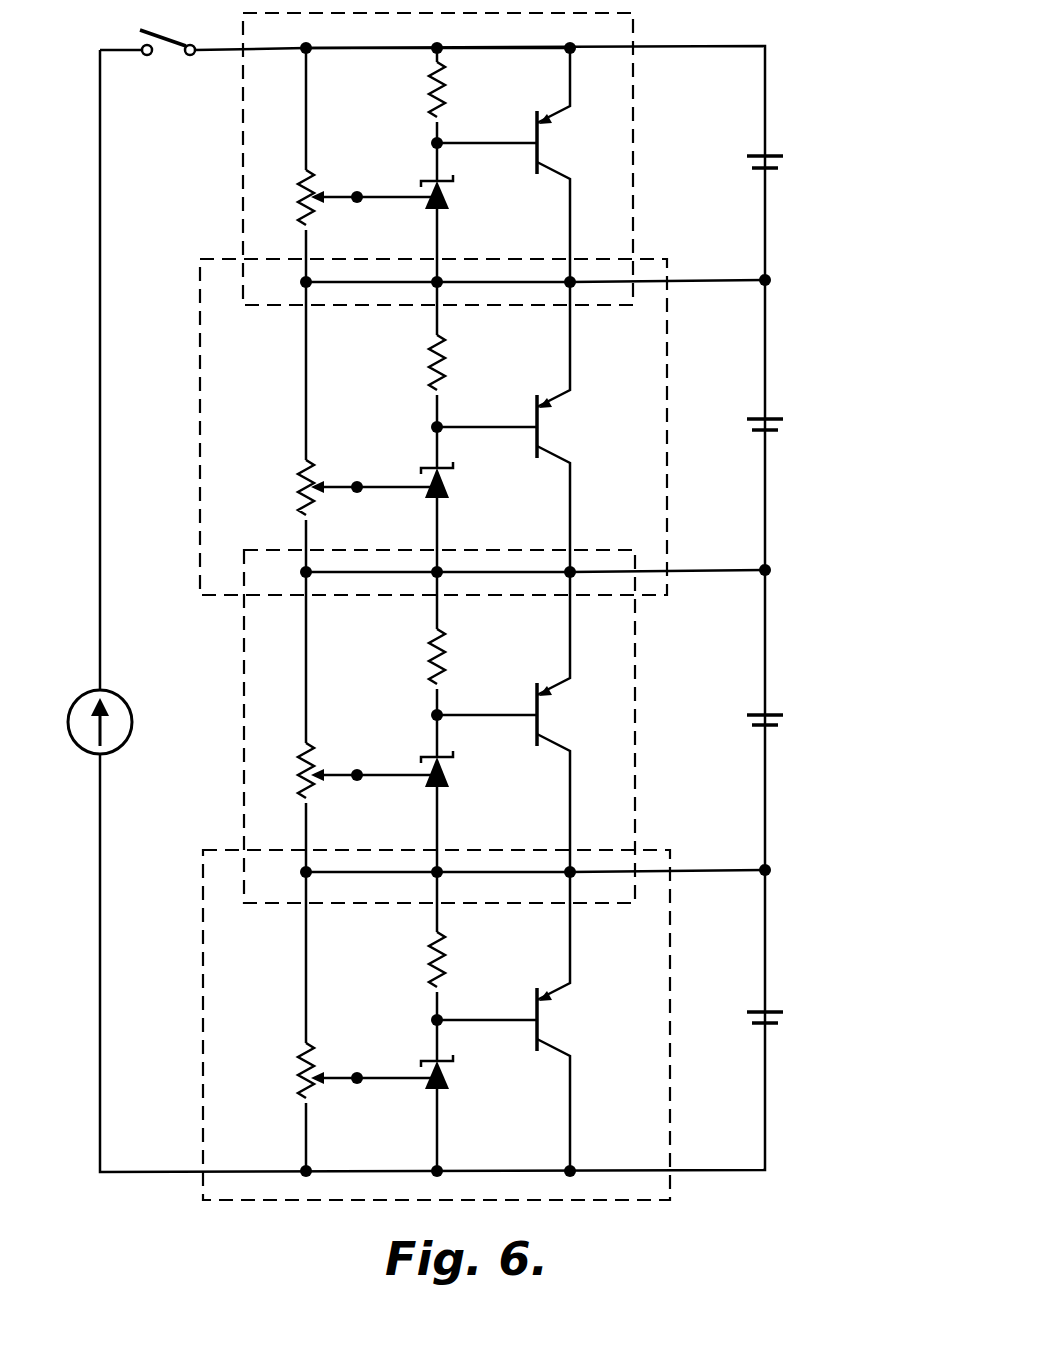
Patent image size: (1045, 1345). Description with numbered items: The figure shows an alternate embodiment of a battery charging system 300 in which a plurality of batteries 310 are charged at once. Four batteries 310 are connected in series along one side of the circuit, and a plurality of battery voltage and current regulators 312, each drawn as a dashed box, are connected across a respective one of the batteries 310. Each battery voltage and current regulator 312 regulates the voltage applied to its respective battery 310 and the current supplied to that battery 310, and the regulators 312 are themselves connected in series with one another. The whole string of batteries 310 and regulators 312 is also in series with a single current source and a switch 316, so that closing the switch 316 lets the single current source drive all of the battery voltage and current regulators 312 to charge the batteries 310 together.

The battery charging system 300 is at (733, 27).
The battery B20 310 is at (766, 155).
The battery voltage and current regulator 312 is at (635, 140).
The switch S10 316 is at (139, 31).